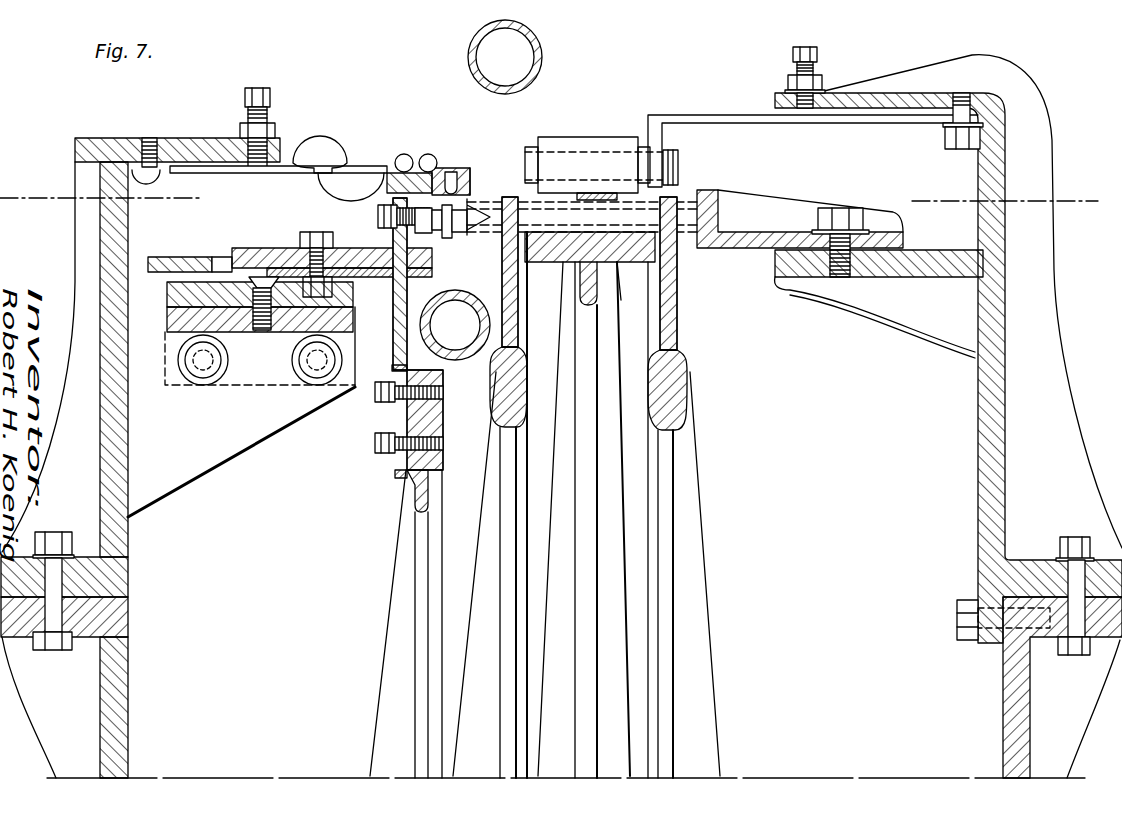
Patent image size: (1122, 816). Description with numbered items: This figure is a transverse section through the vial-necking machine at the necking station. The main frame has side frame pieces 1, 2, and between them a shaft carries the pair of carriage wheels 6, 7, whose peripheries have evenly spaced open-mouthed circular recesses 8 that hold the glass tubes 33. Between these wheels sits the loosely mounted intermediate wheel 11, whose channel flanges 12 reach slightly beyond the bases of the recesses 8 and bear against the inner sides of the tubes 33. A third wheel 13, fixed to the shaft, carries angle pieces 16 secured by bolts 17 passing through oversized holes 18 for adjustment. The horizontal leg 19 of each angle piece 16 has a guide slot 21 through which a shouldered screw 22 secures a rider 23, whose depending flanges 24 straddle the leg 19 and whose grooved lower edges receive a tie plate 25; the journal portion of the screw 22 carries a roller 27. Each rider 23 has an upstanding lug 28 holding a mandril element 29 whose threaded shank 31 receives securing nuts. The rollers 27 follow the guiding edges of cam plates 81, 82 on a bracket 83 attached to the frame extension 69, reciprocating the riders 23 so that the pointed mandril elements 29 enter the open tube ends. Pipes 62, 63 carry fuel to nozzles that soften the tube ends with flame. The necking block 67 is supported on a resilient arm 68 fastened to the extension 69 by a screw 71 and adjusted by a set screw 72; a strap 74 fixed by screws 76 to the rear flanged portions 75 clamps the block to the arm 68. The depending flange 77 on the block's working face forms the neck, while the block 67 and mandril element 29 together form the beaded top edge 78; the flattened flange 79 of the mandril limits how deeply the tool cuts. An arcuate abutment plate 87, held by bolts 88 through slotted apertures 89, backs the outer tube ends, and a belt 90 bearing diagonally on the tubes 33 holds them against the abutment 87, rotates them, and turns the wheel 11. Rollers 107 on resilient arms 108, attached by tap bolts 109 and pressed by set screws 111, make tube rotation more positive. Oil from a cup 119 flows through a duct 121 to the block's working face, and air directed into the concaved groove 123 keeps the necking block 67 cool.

The side frame piece 1 is at (128, 627).
The side frame piece 2 is at (1007, 657).
The wheel 6 is at (678, 327).
The wheel 7 is at (503, 370).
The open-mouthed circular recesses 8 is at (519, 264).
The intermediate wheel 11 is at (617, 270).
The flanges 12 is at (532, 233).
The third wheel 13 is at (443, 378).
The angle pieces 16 is at (407, 287).
The bolts 17 is at (375, 392).
The holes 18 is at (398, 367).
The projecting leg 19 is at (182, 257).
The guide slot 21 is at (222, 257).
The shouldered screw 22 is at (312, 232).
The rider 23 is at (378, 252).
The depending flanges 24 is at (262, 268).
The tie plate 25 is at (335, 288).
The roller 27 is at (290, 298).
The lug 28 is at (418, 232).
The mandril elements 29 is at (437, 235).
The shank 31 is at (378, 215).
The tubes 33 is at (583, 217).
The pipe 62 is at (455, 325).
The pipe 63 is at (505, 57).
The necking block 67 is at (468, 172).
The resilient arm 68 is at (362, 166).
The frame extension 69 is at (105, 138).
The screw 71 is at (152, 138).
The set screw 72 is at (257, 88).
The strap 74 is at (427, 154).
The rear flanged portions 75 is at (388, 184).
The screws 76 is at (403, 154).
The depending flange 77 is at (471, 196).
The beaded top edge 78 is at (460, 234).
The flange 79 is at (452, 240).
The cam plate 81 is at (167, 296).
The cam plate 82 is at (355, 318).
The bracket 83 is at (167, 318).
The arcuate abutment plate 87 is at (703, 189).
The bolts 88 is at (840, 208).
The slotted apertures 89 is at (872, 238).
The belt 90 is at (587, 194).
The rollers 107 is at (578, 137).
The resilient arms 108 is at (710, 115).
The tap bolts 109 is at (966, 93).
The set screws 111 is at (828, 53).
The oil cup 119 is at (325, 131).
The duct 121 is at (316, 181).
The concaved groove 123 is at (452, 172).